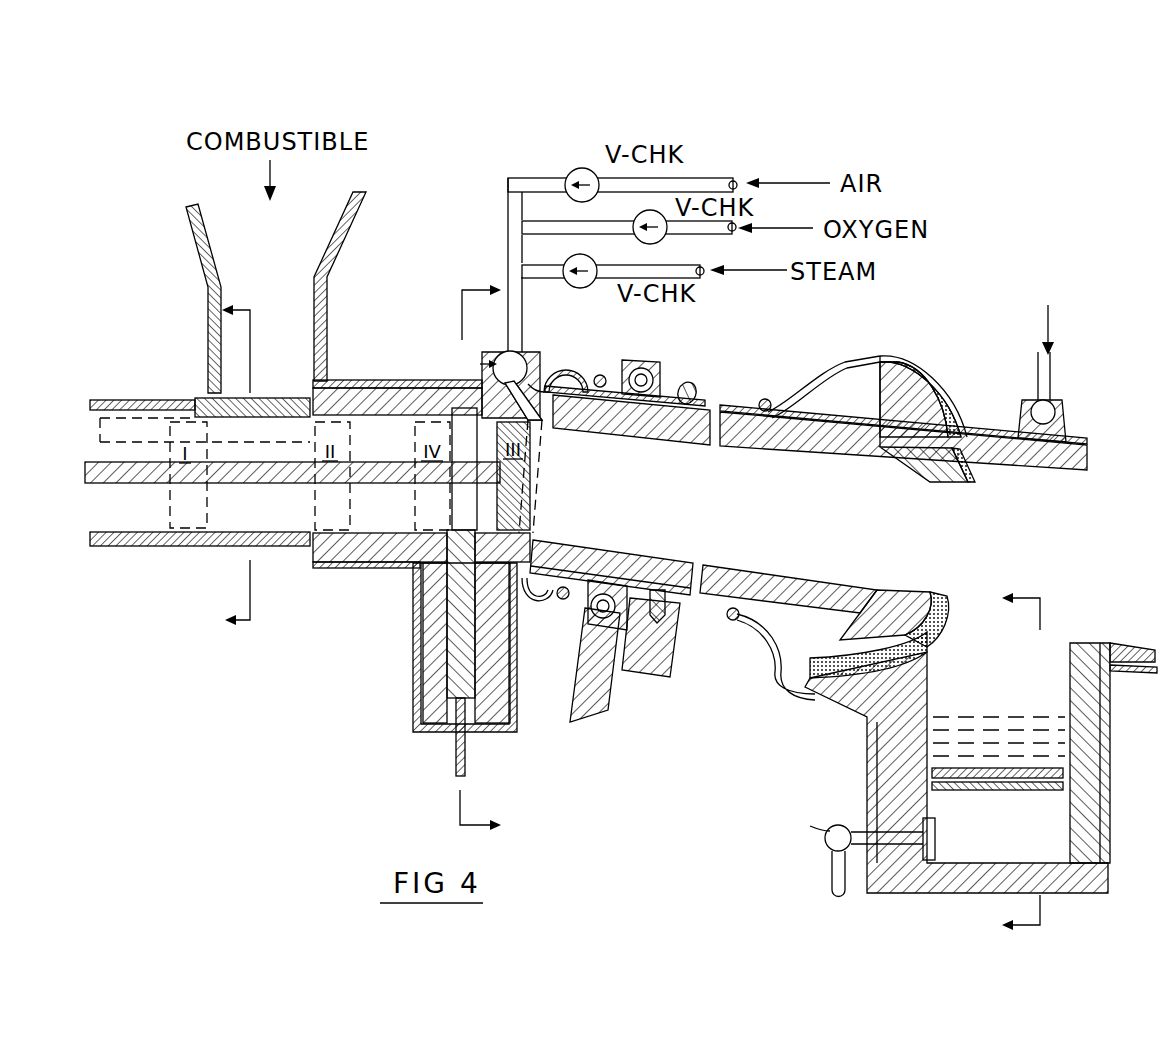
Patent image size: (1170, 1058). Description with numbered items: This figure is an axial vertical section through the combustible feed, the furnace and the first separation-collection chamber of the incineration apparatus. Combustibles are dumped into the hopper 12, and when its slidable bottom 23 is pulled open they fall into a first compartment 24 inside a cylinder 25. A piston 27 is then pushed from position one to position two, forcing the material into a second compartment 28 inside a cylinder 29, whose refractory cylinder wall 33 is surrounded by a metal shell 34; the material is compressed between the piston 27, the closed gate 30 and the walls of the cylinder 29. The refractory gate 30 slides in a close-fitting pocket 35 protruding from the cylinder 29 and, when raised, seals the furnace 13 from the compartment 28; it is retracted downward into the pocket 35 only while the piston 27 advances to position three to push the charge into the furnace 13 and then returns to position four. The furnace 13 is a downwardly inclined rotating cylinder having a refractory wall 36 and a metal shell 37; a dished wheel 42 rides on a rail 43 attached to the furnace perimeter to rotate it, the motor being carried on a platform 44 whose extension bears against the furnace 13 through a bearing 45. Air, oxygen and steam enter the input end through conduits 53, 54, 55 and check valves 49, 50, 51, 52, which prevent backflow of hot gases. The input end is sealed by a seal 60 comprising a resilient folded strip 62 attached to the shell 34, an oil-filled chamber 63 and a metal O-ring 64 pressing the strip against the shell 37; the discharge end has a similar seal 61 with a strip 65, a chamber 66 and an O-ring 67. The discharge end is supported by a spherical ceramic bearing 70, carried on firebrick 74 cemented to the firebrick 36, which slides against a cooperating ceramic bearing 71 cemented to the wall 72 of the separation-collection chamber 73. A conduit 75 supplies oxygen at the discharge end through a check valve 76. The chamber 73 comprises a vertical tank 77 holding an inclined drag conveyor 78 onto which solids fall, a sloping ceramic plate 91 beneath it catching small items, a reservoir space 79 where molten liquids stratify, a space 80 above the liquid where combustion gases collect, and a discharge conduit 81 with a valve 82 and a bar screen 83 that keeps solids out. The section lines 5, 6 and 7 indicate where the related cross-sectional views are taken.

The section line 5- 5 is at (250, 462).
The section line 6- 6 is at (462, 562).
The section line 7- 7 is at (1005, 765).
The hopper 12 is at (267, 234).
The furnace 13 is at (777, 542).
The slidable bottom 23 is at (253, 397).
The first compartment 24 is at (260, 522).
The cylinder 25 is at (195, 548).
The piston 27 is at (170, 506).
The second compartment 28 is at (377, 457).
The cylinder 29 is at (345, 567).
The gate 30 is at (458, 681).
The cylinder wall 33 is at (313, 561).
The metal shell 34 is at (405, 567).
The pocket 35 is at (440, 633).
The refractory wall 36 is at (780, 456).
The metal shell 37 is at (710, 410).
The dished wheel 42 is at (680, 659).
The rail 43 is at (692, 384).
The platform 44 is at (612, 701).
The bearing 45 is at (648, 362).
The check valve 49 is at (588, 170).
The check valve 50 is at (643, 212).
The check valve 51 is at (585, 256).
The check valve 52 is at (534, 355).
The conduit 53 is at (528, 178).
The conduit 54 is at (578, 221).
The conduit 55 is at (533, 284).
The seal 60 is at (586, 363).
The seal 61 is at (866, 352).
The resilient folded strip of metal 62 is at (580, 358).
The chamber 63 is at (606, 376).
The metal O-ring 64 is at (558, 603).
The resilient strip 65 is at (882, 356).
The chamber 66 is at (865, 417).
The O-ring 67 is at (770, 401).
The spherical ceramic bearing 70 is at (910, 373).
The ceramic bearing 71 is at (940, 398).
The wall 72 is at (882, 746).
The separation-collection chamber 73 is at (1027, 569).
The firebrick 74 is at (945, 466).
The conduit 75 is at (1052, 386).
The check valve 76 is at (1058, 413).
The tank 77 is at (1012, 674).
The drag conveyor 78 is at (988, 768).
The reservoir space 79 is at (1108, 831).
The space 80 is at (1031, 521).
The discharge conduit 81 is at (860, 830).
The valve 82 is at (823, 844).
The bar screen 83 is at (936, 841).
The sloping ceramic plate 91 is at (1038, 790).